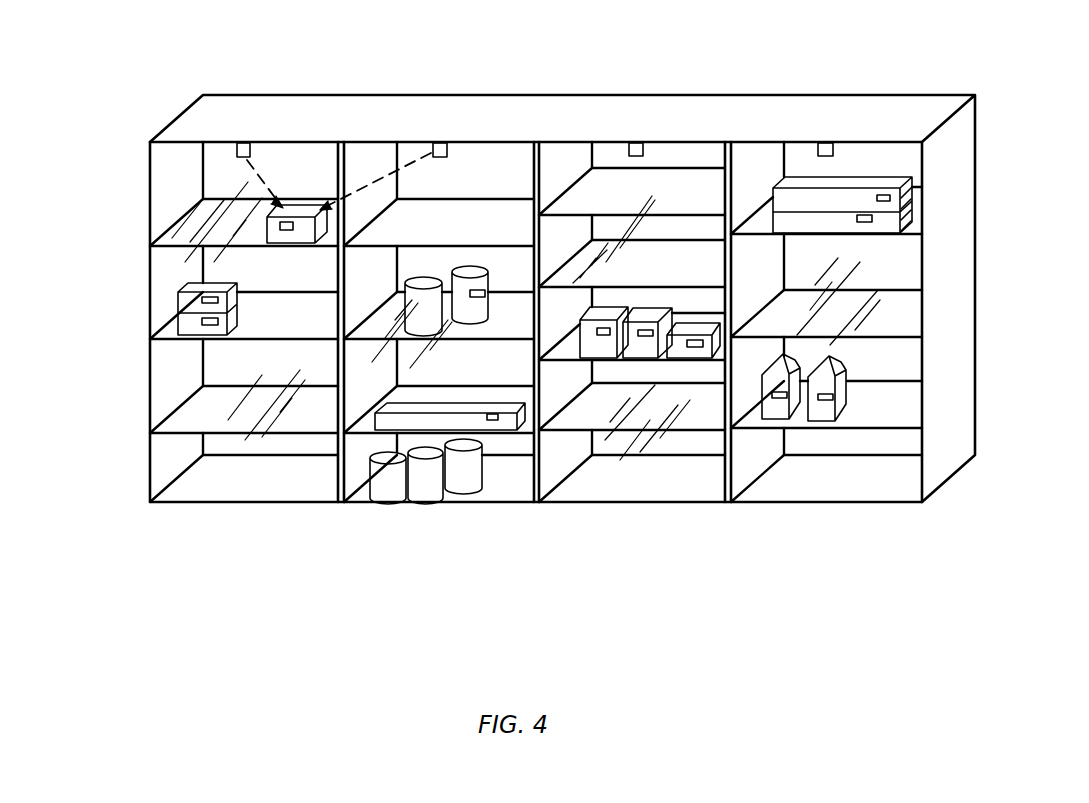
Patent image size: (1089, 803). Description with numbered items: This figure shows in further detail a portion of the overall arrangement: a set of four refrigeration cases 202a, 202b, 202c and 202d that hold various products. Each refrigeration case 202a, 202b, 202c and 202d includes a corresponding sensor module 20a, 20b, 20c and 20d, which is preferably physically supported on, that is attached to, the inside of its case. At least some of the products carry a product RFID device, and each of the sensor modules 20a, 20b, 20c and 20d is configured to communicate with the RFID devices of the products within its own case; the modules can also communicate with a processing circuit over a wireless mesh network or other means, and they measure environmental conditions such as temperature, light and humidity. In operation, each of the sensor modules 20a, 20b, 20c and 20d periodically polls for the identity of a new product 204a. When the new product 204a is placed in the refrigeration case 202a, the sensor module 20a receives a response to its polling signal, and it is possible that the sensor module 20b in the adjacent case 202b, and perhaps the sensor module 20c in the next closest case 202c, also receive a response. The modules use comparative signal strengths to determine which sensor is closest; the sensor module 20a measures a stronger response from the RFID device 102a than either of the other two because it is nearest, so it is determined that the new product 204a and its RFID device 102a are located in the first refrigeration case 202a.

The sensor module 20a is at (244, 143).
The sensor module 20b is at (440, 143).
The sensor module 20c is at (636, 143).
The sensor module 20d is at (825, 143).
The RFID device 102a is at (287, 219).
The refrigeration case 202a is at (243, 507).
The refrigeration case 202b is at (448, 507).
The refrigeration case 202c is at (633, 505).
The refrigeration case 202d is at (835, 504).
The new product 204a is at (277, 238).